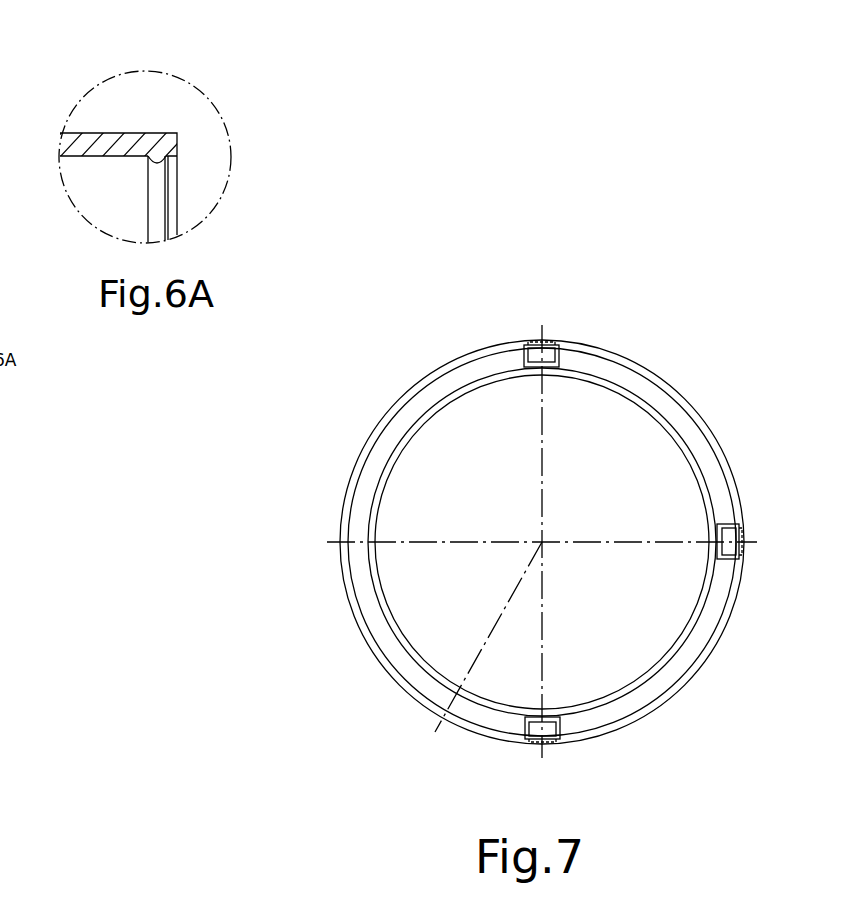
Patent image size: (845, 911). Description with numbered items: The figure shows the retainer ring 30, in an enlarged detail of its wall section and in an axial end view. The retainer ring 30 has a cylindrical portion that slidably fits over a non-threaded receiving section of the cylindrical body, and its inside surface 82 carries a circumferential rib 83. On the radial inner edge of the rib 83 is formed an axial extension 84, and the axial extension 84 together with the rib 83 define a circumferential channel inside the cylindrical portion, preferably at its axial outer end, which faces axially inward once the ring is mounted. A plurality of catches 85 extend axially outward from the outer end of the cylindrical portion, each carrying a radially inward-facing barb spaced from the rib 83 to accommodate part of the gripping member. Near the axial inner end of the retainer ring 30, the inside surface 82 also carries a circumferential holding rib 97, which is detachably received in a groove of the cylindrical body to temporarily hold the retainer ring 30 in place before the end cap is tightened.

In FIG. 6A, the retainer ring 30 is at (142, 127).
In FIG. 7, the retainer ring 30 is at (768, 442).
In FIG. 6A, the inside surface 82 is at (110, 158).
In FIG. 6A, the circumferential holding rib 97 is at (153, 160).
In FIG. 7, the circumferential rib 83 is at (658, 396).
In FIG. 7, the axial extension 84 is at (662, 422).
In FIG. 7, the catches 85 is at (550, 360).